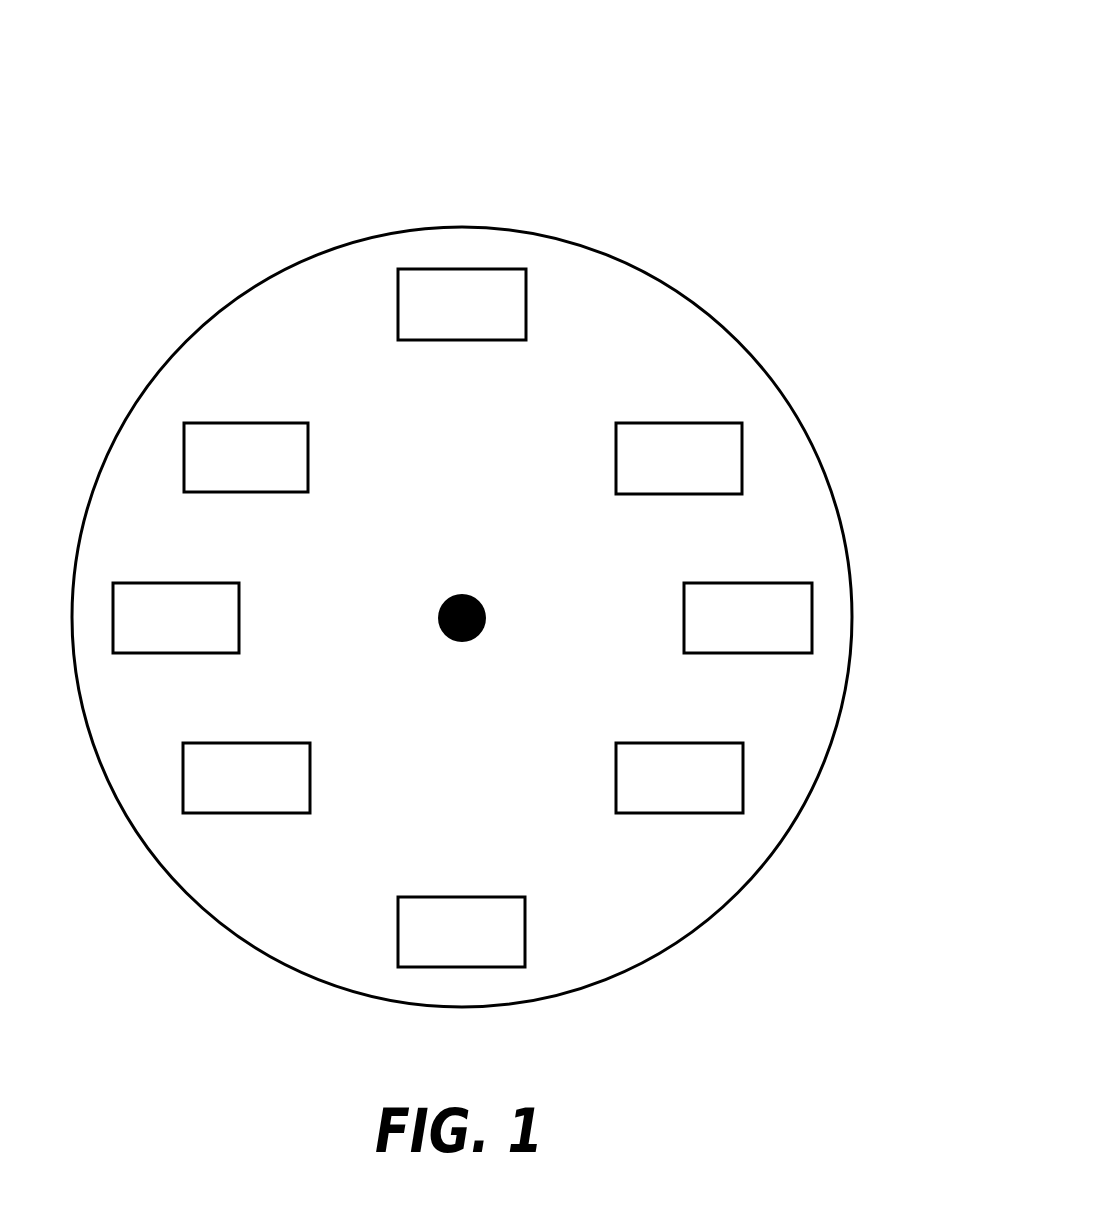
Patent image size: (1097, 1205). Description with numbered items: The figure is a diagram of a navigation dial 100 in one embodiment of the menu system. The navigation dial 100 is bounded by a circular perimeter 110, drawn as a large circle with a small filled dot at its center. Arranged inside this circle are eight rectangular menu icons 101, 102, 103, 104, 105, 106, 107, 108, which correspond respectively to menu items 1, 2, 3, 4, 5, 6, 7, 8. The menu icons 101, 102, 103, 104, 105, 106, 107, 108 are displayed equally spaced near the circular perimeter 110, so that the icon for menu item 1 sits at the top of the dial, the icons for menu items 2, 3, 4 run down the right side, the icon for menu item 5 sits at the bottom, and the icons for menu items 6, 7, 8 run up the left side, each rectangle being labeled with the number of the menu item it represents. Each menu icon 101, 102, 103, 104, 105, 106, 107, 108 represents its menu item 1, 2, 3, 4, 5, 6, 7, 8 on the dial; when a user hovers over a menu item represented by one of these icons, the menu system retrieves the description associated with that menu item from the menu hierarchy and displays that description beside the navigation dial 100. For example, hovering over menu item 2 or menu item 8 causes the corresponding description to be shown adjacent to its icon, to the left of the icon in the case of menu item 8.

The navigation dial 100 is at (757, 164).
The circular perimeter 110 is at (741, 340).
The menu item 1 is at (462, 304).
The menu item 2 is at (679, 458).
The menu item 3 is at (748, 618).
The menu item 4 is at (679, 778).
The menu item 5 is at (461, 932).
The menu item 6 is at (246, 778).
The menu item 7 is at (176, 618).
The menu item 8 is at (246, 457).
The menu icon 101 is at (462, 359).
The menu icon 102 is at (636, 479).
The menu icon 103 is at (680, 618).
The menu icon 104 is at (635, 755).
The menu icon 105 is at (461, 881).
The menu icon 106 is at (289, 755).
The menu icon 107 is at (245, 618).
The menu icon 108 is at (290, 480).